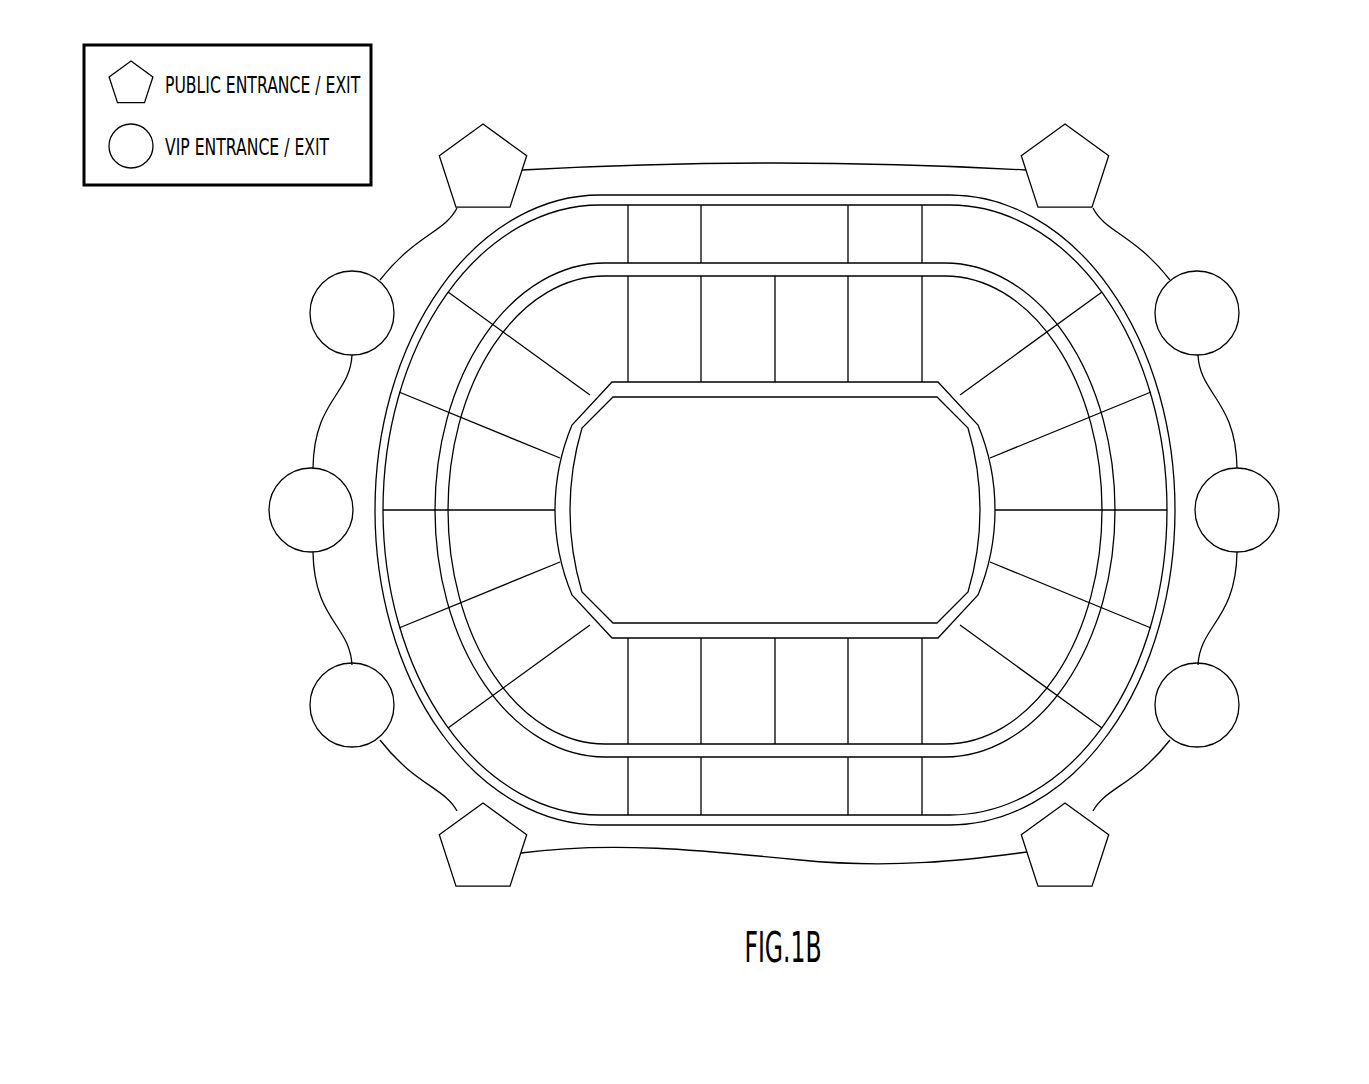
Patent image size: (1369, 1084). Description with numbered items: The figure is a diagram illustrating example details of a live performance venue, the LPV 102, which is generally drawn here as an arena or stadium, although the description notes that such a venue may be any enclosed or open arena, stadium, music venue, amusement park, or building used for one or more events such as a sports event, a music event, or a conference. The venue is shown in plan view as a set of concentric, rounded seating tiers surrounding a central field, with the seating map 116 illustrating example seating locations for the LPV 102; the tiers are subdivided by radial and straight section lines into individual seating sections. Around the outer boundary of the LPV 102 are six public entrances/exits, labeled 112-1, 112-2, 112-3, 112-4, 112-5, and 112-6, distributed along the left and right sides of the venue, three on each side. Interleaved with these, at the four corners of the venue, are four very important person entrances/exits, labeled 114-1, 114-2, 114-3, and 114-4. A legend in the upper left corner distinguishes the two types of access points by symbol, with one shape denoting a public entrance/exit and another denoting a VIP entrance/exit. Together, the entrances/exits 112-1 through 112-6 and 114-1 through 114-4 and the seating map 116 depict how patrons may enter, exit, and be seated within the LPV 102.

The LPV 102 is at (1181, 217).
The seating map 116 is at (1054, 730).
The VIP entrance/exit 114-1 is at (462, 865).
The VIP entrance/exit 114-2 is at (462, 186).
The VIP entrance/exit 114-3 is at (1044, 186).
The VIP entrance/exit 114-4 is at (1044, 865).
The public entrance/exit 112-1 is at (331, 717).
The public entrance/exit 112-2 is at (290, 522).
The public entrance/exit 112-3 is at (331, 325).
The public entrance/exit 112-4 is at (1176, 325).
The public entrance/exit 112-5 is at (1216, 522).
The public entrance/exit 112-6 is at (1176, 717).